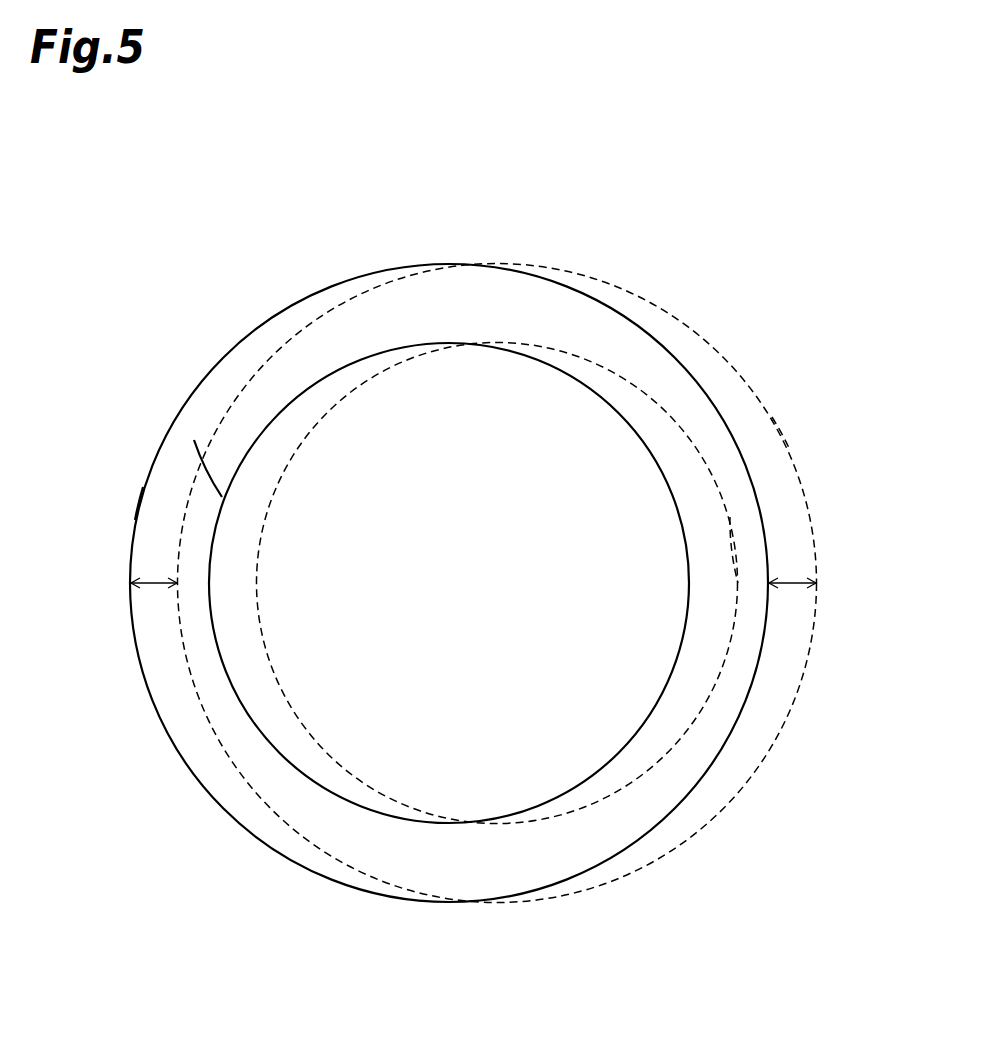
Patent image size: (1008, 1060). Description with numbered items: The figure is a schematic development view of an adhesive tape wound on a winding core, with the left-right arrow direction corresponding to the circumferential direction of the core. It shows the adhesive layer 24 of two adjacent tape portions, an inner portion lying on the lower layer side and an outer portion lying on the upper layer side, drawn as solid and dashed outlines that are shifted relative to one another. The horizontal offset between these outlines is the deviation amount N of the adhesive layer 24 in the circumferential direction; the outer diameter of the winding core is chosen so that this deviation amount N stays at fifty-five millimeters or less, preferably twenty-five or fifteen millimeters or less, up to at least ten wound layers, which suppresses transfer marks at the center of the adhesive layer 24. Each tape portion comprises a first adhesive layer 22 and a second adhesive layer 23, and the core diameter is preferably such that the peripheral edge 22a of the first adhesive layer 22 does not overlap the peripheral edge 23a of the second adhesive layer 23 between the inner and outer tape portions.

The first adhesive layer 22 is at (262, 425).
The second adhesive layer 23 is at (193, 390).
The adhesive layer 24 is at (100, 275).
The peripheral edge of the first adhesive layer 22a is at (222, 497).
The peripheral edge of the second adhesive layer 23a is at (143, 487).
The deviation amount N is at (155, 582).